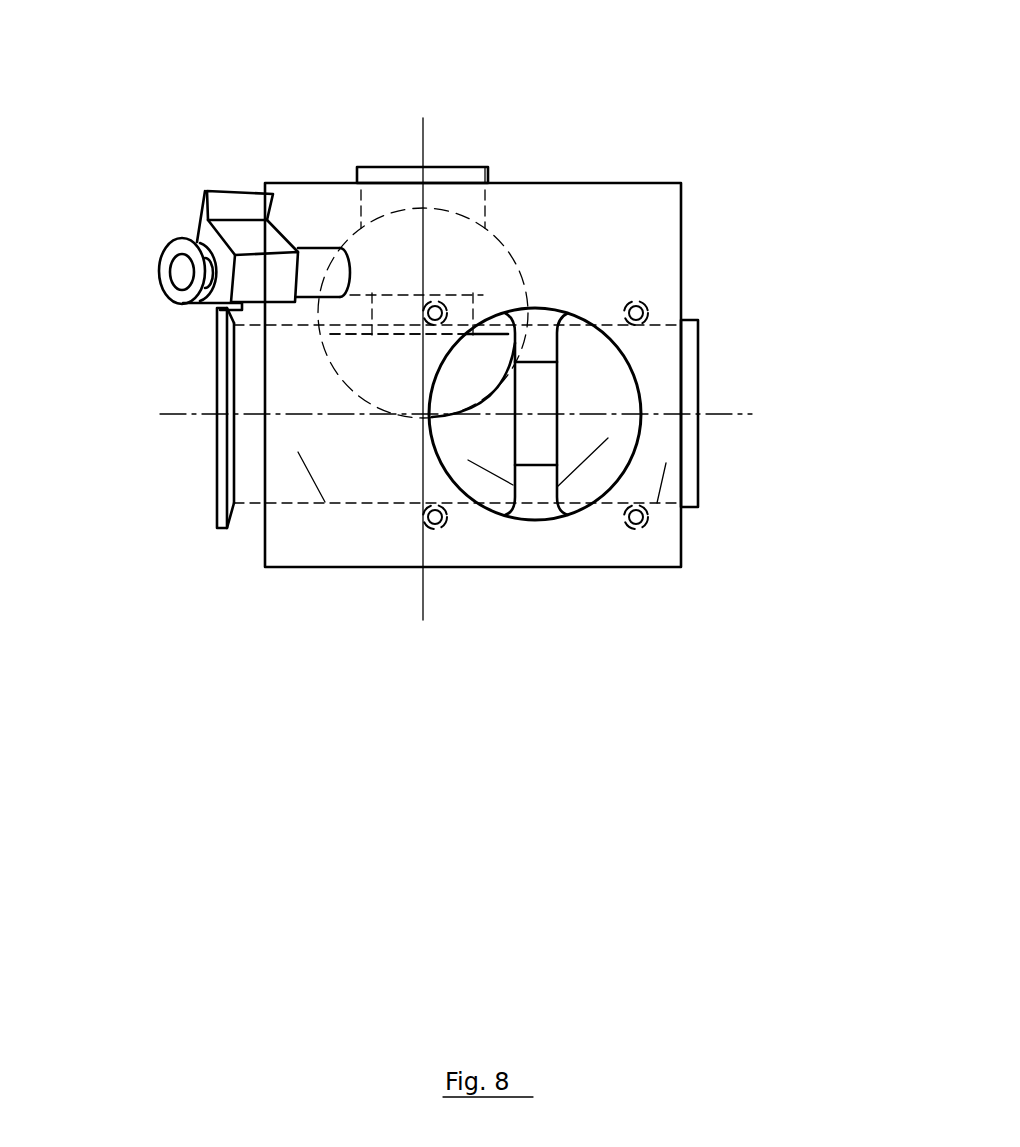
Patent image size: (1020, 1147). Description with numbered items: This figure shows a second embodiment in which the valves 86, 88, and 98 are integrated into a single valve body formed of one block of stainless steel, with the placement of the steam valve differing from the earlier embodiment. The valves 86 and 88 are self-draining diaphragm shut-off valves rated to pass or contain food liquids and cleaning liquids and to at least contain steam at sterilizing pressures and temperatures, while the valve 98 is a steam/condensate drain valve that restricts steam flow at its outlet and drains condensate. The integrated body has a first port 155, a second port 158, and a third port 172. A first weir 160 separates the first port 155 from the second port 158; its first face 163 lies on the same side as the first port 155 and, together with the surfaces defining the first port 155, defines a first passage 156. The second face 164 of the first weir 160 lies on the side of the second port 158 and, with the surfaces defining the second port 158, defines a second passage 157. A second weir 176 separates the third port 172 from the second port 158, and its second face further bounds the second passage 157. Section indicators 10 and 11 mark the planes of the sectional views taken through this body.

The section line 10- 10 is at (160, 414).
The section line 11- 11 is at (423, 118).
The valve 86 is at (567, 303).
The valve 88 is at (507, 247).
The steam/condensate drain valve 98 is at (229, 188).
The first port 155 is at (797, 373).
The first passage 156 is at (784, 507).
The second passage 157 is at (184, 555).
The second port 158 is at (138, 443).
The first weir 160 is at (608, 438).
The first face 163 is at (557, 377).
The second face 164 is at (543, 596).
The third port 172 is at (515, 124).
The second weir 176 is at (354, 535).